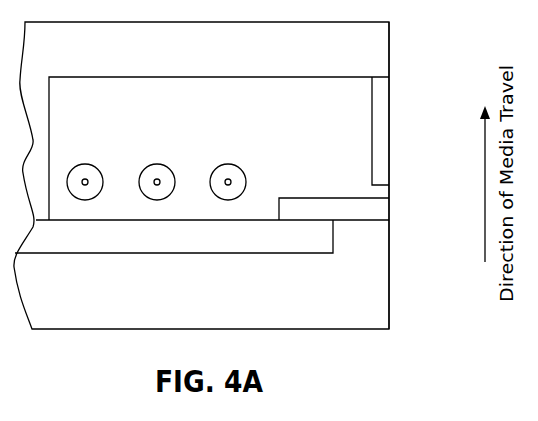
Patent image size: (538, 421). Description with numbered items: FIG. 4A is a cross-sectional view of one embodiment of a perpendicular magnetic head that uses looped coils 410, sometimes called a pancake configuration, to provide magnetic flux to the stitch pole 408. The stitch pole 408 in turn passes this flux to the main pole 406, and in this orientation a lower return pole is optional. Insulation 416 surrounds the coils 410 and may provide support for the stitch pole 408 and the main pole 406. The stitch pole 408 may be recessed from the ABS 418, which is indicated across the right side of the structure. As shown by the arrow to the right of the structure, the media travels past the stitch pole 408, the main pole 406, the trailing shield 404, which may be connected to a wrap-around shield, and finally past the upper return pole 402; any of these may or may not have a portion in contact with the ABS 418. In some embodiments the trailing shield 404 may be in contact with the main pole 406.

The upper return pole 402 is at (201, 175).
The trailing shield 404 is at (389, 112).
The main pole 406 is at (389, 205).
The stitch pole 408 is at (174, 236).
The looped coils 410 is at (80, 164).
The insulation 416 is at (212, 148).
The ABS 418 is at (396, 40).